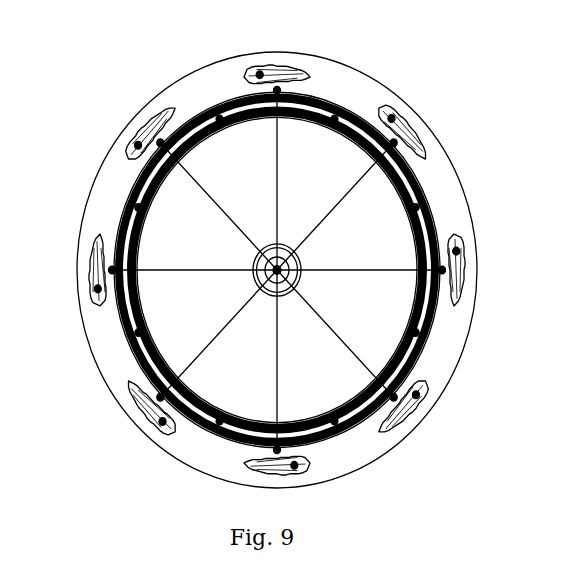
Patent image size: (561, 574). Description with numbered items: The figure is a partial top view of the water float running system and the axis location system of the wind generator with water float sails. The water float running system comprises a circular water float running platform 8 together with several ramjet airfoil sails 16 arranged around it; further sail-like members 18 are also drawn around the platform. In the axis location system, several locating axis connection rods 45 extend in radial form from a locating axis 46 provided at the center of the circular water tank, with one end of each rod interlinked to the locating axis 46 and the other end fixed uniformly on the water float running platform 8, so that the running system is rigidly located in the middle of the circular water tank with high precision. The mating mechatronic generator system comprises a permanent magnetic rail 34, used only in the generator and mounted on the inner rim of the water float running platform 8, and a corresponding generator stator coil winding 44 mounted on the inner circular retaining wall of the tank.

The water float running platform 8 is at (108, 360).
The ramjet airfoil sails 16 is at (416, 395).
The fins 18 is at (260, 75).
The permanent magnetic rail 34 is at (135, 205).
The generator stator coil winding 44 is at (220, 119).
The locating axis connection rods 45 is at (183, 270).
The locating axis 46 is at (285, 249).